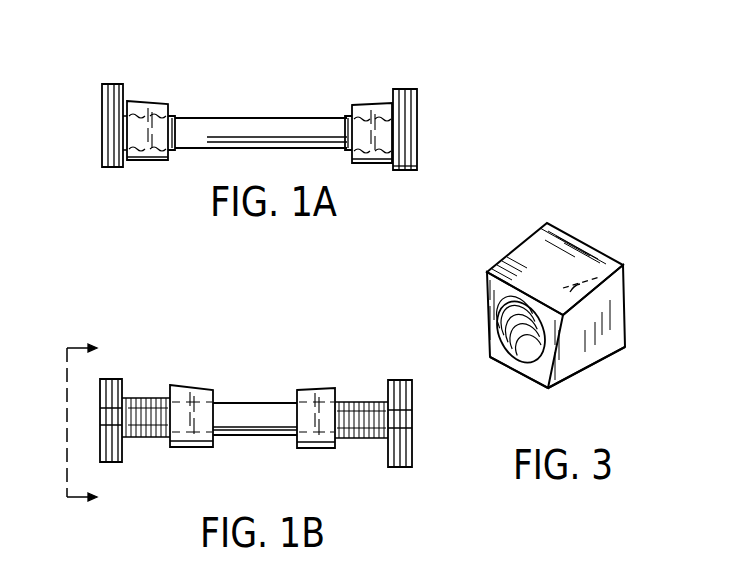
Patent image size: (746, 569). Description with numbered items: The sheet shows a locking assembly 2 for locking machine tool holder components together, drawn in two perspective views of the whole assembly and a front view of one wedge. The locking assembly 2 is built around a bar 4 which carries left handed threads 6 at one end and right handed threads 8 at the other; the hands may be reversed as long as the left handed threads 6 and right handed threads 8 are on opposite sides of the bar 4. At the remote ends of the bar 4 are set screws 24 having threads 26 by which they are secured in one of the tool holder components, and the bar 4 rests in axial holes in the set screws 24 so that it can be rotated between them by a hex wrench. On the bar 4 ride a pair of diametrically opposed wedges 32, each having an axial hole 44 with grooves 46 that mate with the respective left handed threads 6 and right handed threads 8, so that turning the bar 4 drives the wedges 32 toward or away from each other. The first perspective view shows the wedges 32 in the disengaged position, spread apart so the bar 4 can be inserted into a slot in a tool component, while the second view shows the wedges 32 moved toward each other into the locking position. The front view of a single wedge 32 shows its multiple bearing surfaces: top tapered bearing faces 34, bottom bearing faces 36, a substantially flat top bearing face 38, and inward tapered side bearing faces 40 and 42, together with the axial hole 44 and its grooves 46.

In FIG. 1A, the locking assembly 2 is at (146, 49).
In FIG. 1B, the locking assembly 2 is at (92, 423).
In FIG. 1A, the bar 4 is at (250, 128).
In FIG. 1B, the bar 4 is at (248, 412).
In FIG. 1A, the left handed threads 6 is at (173, 113).
In FIG. 1A, the right handed threads 8 is at (347, 120).
In FIG. 1A, the set screws 24 is at (415, 97).
In FIG. 1A, the threads 26 is at (403, 170).
In FIG. 1A, the wedges 32 is at (142, 118).
In FIG. 1B, the wedges 32 is at (189, 375).
In FIG. 3, the wedges 32 is at (543, 208).
In FIG. 3, the top tapered bearing faces 34 is at (518, 268).
In FIG. 3, the bottom bearing faces 36 is at (527, 380).
In FIG. 3, the flat top bearing faces 38 is at (593, 262).
In FIG. 3, the inward tapered side bearing face 40 is at (555, 387).
In FIG. 3, the inward tapered side bearing face 42 is at (485, 340).
In FIG. 3, the axial holes 44 is at (517, 352).
In FIG. 3, the grooves 46 is at (502, 310).